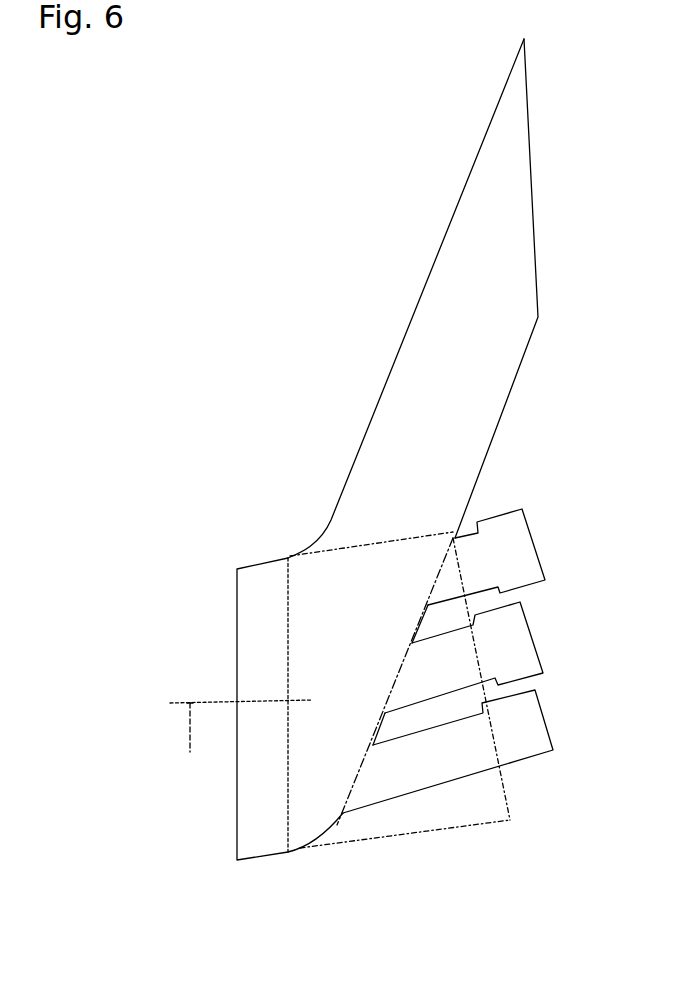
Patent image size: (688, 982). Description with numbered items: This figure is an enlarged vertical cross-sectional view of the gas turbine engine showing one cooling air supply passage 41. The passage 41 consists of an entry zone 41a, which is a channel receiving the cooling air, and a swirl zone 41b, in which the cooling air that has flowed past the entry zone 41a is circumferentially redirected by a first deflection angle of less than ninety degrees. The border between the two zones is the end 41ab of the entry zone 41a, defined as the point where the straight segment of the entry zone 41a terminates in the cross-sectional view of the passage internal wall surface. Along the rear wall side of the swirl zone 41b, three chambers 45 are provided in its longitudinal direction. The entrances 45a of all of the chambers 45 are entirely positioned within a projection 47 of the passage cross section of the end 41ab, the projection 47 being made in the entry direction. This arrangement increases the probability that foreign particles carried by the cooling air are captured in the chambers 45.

The cooling air supply passage 41 is at (381, 482).
The entry zone 41a is at (258, 848).
The swirl zone 41b is at (498, 387).
The end of the entry zone 41ab is at (288, 795).
The chamber 45 is at (470, 528).
The entrance 45a is at (436, 585).
The projection 47 is at (512, 805).